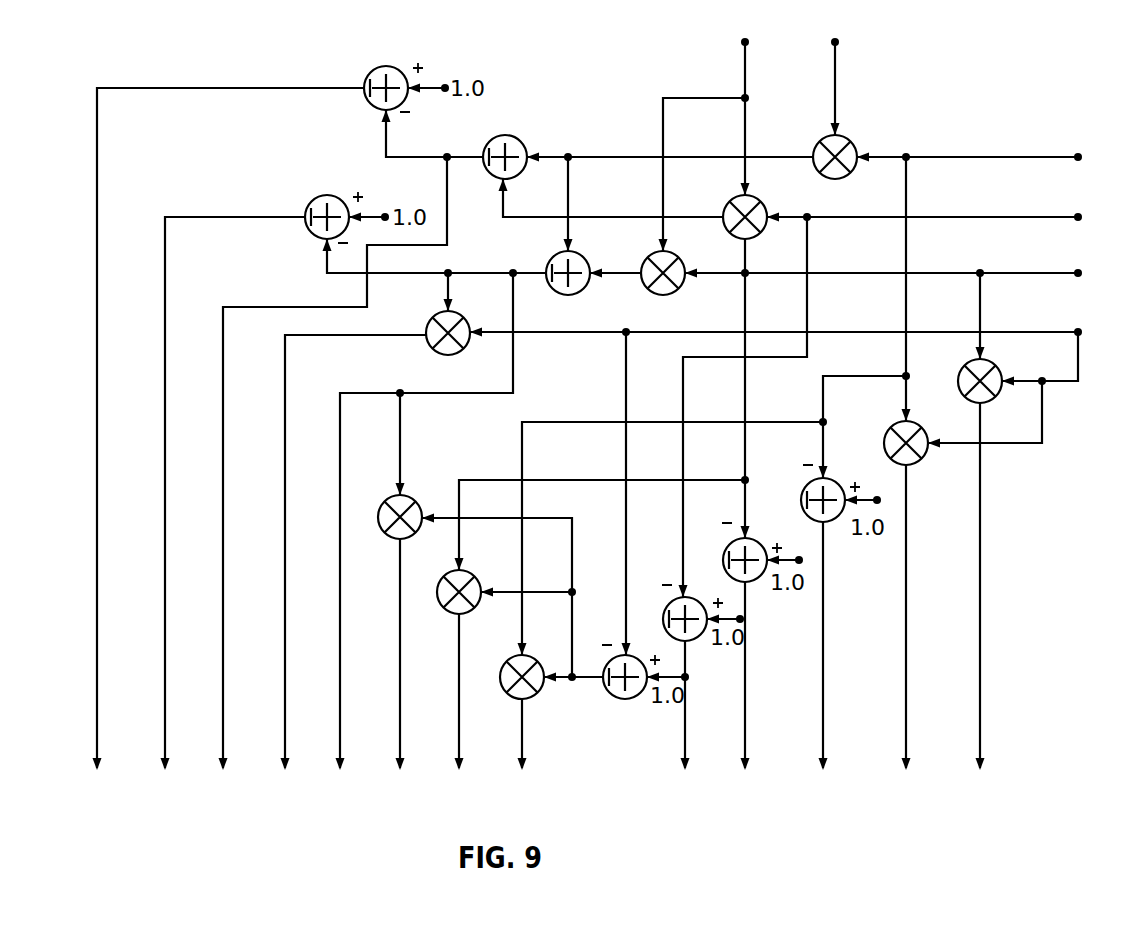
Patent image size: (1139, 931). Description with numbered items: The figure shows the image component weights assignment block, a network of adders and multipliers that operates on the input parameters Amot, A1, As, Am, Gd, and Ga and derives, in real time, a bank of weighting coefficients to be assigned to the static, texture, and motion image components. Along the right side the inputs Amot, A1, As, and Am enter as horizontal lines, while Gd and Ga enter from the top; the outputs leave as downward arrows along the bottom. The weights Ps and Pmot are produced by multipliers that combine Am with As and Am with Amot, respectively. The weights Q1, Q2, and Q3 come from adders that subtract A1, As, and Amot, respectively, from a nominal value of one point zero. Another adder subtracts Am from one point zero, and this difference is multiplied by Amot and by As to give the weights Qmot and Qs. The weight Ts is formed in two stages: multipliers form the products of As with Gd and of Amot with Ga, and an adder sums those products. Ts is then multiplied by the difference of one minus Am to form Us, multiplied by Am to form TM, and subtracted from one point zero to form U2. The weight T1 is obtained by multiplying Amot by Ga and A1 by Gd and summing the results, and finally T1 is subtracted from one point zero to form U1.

The input parameter Gd is at (762, 288).
The input parameter Ga is at (852, 86).
The input parameter Amot is at (969, 274).
The input parameter A1 is at (881, 392).
The input parameter As is at (883, 301).
The input parameter Am is at (776, 478).
The weight U1 is at (229, 434).
The weight U2 is at (233, 498).
The weight T1 is at (335, 465).
The weight Tm TM is at (354, 558).
The weight Ts is at (427, 520).
The weight Us is at (413, 658).
The weight Qs is at (472, 696).
The weight Qmot is at (535, 740).
The weight Q1 is at (698, 705).
The weight Q2 is at (758, 676).
The weight Q3 is at (836, 646).
The weight Pmot is at (919, 617).
The weight Ps is at (993, 586).